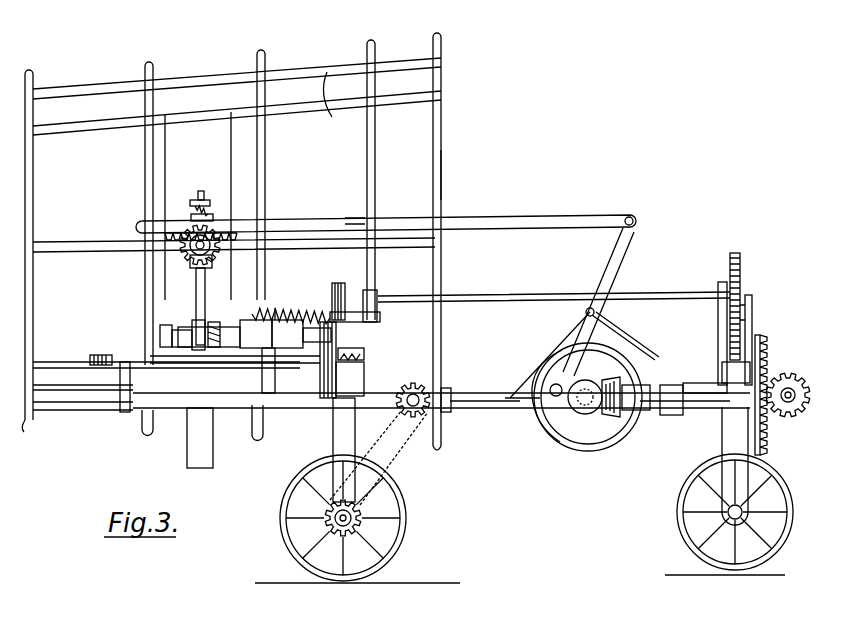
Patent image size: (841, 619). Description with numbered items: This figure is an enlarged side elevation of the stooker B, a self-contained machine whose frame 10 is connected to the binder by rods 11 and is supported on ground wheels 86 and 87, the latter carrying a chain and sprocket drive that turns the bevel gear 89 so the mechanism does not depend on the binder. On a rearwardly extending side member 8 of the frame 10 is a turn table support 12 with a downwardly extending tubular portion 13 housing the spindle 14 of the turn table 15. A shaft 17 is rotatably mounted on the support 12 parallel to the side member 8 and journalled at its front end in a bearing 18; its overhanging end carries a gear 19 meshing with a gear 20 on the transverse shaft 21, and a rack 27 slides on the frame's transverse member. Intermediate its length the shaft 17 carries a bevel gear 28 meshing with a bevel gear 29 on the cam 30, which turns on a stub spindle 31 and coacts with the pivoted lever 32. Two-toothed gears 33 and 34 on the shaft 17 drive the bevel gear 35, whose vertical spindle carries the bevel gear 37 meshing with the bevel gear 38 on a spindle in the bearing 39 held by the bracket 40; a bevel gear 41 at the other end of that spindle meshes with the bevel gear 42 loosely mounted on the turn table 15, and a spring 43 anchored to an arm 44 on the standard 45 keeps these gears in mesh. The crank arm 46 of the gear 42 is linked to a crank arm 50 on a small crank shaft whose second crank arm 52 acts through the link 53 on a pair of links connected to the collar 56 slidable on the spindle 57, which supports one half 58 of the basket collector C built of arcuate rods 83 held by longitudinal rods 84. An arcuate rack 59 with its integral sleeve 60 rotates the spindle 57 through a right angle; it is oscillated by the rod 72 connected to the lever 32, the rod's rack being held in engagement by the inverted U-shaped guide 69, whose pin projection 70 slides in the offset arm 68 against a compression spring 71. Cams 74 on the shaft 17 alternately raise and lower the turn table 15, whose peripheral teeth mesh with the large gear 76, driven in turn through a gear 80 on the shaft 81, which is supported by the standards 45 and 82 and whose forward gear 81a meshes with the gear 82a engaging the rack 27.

The side members 8 is at (470, 393).
The stooker frame 10 is at (690, 383).
The rods 11 is at (122, 386).
The turn table support 12 is at (150, 410).
The tubular portion 13 is at (187, 445).
The spindle 14 is at (122, 404).
The turn table 15 is at (125, 362).
The shaft 17 is at (498, 409).
The bearing 18 is at (672, 416).
The gear 19 is at (765, 348).
The gear 20 is at (792, 376).
The transverse shaft 21 is at (790, 402).
The rack 27 is at (730, 370).
The bevel gear 28 is at (640, 412).
The bevel gear 29 is at (584, 414).
The cam 30 is at (548, 432).
The stub spindle 31 is at (625, 345).
The lever 32 is at (612, 276).
The gear 33 is at (350, 418).
The gear 34 is at (333, 430).
The bevel gear 35 is at (364, 372).
The bevel gear 37 is at (364, 350).
The bevel gear 38 is at (301, 334).
The bearing 39 is at (276, 308).
The bracket 40 is at (378, 314).
The bevel gear 41 is at (213, 322).
The bevel gear 42 is at (195, 322).
The spring 43 is at (292, 312).
The arm 44 is at (340, 285).
The standard 45 is at (338, 352).
The crank arm 46 is at (162, 332).
The crank arm 50 is at (160, 334).
The crank arm 52 is at (172, 336).
The link 53 is at (225, 334).
The collar 56 is at (190, 260).
The spindle 57 is at (185, 246).
The half of the basket collector 58 is at (441, 134).
The arcuate rack 59 is at (172, 232).
The sleeve 60 is at (212, 262).
The offset arm 68 is at (199, 192).
The guide 69 is at (213, 218).
The pin projection 70 is at (210, 202).
The compression spring 71 is at (210, 210).
The rod 72 is at (320, 220).
The cams 74 is at (258, 437).
The large gear 76 is at (318, 362).
The gear 80 is at (376, 292).
The shaft 81 is at (520, 296).
The gear 81a is at (742, 285).
The standard 82 is at (718, 292).
The gear 82a is at (742, 320).
The arcuate rods 83 is at (257, 60).
The longitudinal rods 84 is at (332, 117).
The ground wheel 86 is at (677, 513).
The ground wheel 87 is at (404, 505).
The bevel gear 89 is at (447, 388).
The stooker B is at (547, 355).
The basket collector C is at (441, 185).